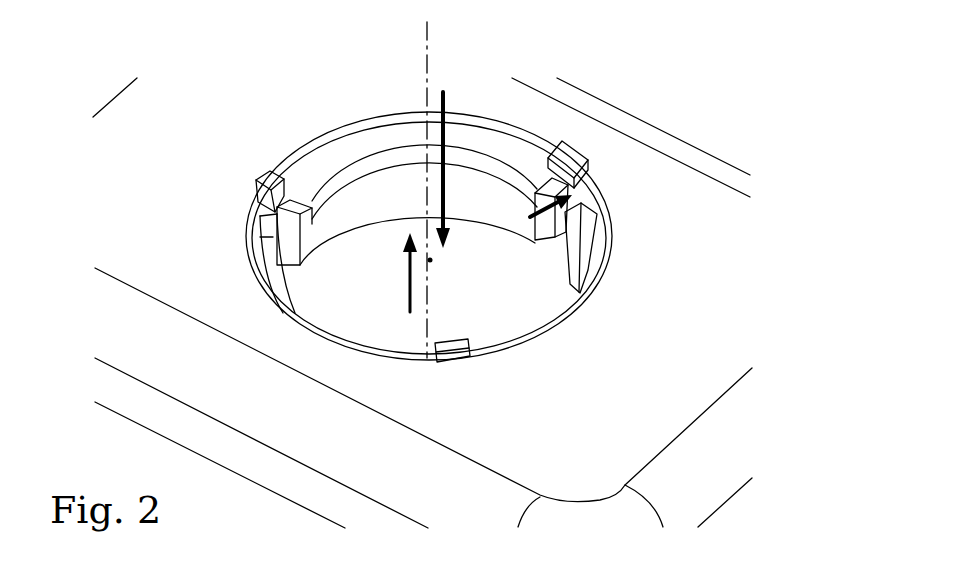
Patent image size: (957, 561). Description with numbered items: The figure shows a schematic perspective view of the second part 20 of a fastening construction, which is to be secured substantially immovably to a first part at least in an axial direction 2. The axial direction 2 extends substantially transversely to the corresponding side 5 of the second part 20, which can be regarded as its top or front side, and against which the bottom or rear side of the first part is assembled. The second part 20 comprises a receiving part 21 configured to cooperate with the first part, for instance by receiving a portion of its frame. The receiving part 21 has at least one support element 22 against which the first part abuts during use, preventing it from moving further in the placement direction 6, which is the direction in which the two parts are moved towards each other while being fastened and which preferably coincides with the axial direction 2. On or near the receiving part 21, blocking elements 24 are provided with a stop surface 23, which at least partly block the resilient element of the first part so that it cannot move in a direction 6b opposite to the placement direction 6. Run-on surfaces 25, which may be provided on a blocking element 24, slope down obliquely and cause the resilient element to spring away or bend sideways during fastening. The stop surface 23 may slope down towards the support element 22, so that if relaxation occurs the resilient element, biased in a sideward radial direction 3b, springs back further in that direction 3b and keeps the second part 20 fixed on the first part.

The axial direction 2 is at (427, 93).
The corresponding side 5 is at (529, 96).
The placement direction 6 is at (446, 137).
The direction opposite to the placement direction 6b is at (408, 278).
The sideward direction 3b is at (547, 214).
The second part 20 is at (716, 104).
The receiving part 21 is at (302, 136).
The support element 22 is at (522, 170).
The stop surface 23 is at (270, 228).
The blocking element 24 is at (266, 206).
The run-on surface 25 is at (270, 192).